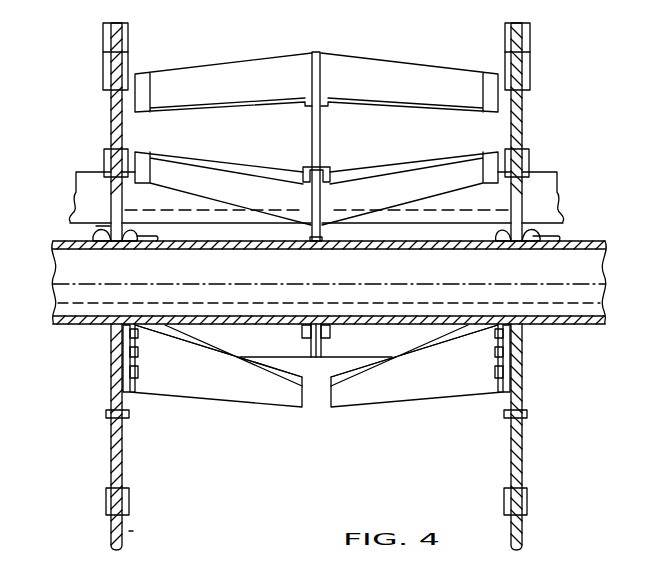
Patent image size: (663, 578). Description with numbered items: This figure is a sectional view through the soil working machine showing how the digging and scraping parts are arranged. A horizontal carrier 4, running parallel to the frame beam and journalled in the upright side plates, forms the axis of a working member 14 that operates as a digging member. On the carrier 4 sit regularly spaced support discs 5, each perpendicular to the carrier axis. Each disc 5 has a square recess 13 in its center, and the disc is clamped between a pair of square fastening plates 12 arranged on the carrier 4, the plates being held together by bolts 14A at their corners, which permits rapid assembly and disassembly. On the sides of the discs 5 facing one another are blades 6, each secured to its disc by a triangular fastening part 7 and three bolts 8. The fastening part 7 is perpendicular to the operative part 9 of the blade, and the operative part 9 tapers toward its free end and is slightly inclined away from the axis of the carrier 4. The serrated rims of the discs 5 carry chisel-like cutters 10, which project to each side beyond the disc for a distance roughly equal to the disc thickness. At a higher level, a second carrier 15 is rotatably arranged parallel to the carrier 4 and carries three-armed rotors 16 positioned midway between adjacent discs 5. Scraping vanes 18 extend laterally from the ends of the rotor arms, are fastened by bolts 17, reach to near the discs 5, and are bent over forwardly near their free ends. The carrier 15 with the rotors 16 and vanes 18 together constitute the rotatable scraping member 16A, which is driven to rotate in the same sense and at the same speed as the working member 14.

The carrier 4 is at (72, 303).
The support disc 5 is at (110, 106).
The blade 6 is at (200, 405).
The fastening part 7 is at (111, 371).
The bolt 8 is at (138, 348).
The operative part 9 is at (263, 394).
The cutter 10 is at (103, 61).
The fastening plate 12 is at (119, 247).
The square recess 13 is at (110, 228).
The working member 14 is at (130, 531).
The bolt 14A is at (150, 247).
The carrier 15 is at (92, 196).
The rotor 16 is at (311, 130).
The scraping member 16A is at (258, 30).
The bolt 17 is at (332, 169).
The vane 18 is at (246, 97).